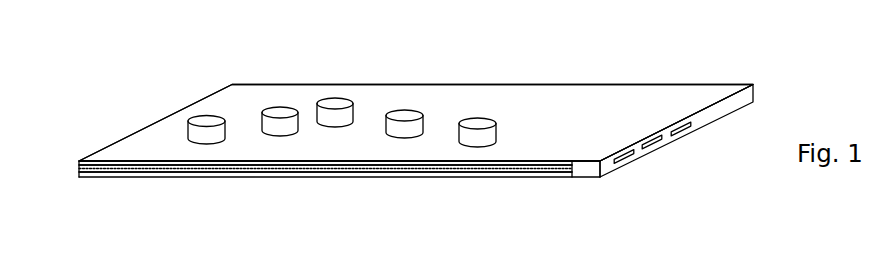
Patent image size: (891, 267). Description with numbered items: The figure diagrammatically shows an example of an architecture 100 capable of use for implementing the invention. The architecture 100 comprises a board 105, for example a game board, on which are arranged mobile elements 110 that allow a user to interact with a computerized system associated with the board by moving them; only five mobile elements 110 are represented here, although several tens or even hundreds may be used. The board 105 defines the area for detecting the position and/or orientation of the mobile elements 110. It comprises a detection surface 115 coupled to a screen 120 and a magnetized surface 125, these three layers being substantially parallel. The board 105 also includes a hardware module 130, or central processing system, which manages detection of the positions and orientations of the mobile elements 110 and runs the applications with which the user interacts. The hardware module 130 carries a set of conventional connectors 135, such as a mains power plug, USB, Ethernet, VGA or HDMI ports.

The architecture 100 is at (778, 78).
The board 105 is at (600, 92).
The mobile elements 110 is at (335, 102).
The detection surface 115 is at (79, 167).
The screen 120 is at (79, 161).
The magnetized surface 125 is at (79, 177).
The hardware module 130 is at (703, 117).
The connectors 135 is at (632, 160).